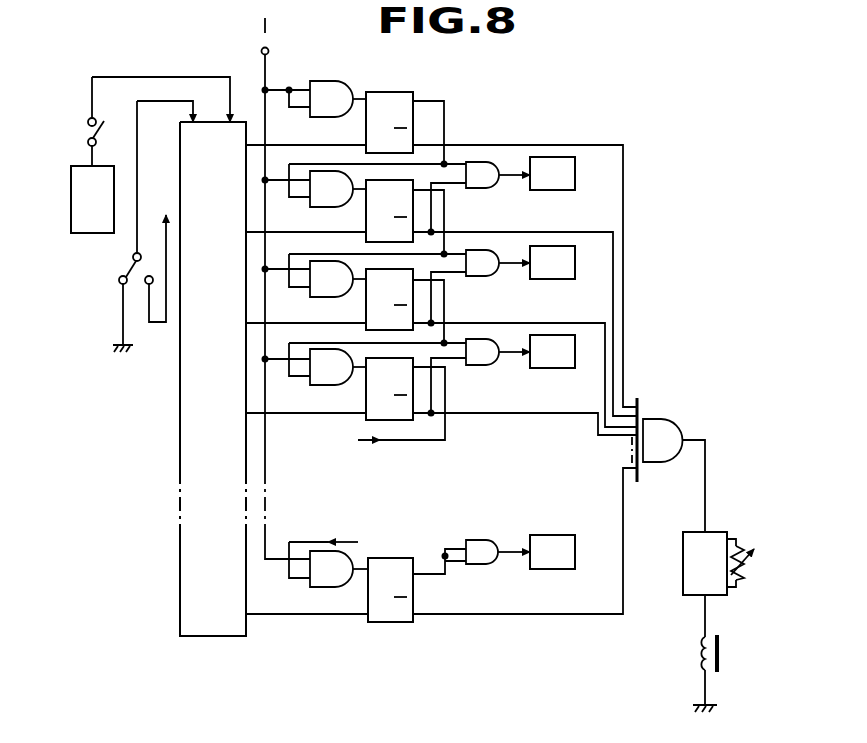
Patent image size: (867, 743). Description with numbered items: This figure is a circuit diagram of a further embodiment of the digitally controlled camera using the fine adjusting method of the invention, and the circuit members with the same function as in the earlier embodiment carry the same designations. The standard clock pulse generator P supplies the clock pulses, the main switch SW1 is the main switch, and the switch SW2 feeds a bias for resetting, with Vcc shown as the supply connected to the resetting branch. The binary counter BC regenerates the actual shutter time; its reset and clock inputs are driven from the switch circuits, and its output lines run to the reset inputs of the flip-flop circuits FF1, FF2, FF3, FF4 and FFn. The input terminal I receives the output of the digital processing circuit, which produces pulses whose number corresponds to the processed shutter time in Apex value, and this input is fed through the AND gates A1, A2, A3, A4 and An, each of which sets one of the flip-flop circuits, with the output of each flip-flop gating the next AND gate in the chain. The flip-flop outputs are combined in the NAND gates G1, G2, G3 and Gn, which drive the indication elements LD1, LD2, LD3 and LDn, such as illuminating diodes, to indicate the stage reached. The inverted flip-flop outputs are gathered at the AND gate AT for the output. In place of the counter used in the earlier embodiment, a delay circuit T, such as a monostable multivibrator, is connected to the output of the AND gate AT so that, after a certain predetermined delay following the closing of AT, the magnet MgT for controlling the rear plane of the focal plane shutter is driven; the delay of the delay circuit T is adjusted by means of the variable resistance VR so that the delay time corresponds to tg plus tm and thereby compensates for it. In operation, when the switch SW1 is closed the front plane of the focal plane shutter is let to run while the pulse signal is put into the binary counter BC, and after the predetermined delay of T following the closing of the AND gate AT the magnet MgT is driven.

The input terminal I is at (286, 288).
The main switch SW1 is at (89, 133).
The standard clock pulse generator P is at (92, 189).
The switch for feeding a bias for resetting SW2 is at (142, 266).
The power supply Vcc is at (162, 255).
The binary counter BC is at (213, 379).
The AND gate A1 is at (314, 99).
The AND gate A2 is at (314, 185).
The AND gate A3 is at (314, 275).
The AND gate A4 is at (314, 364).
The AND gate An is at (328, 564).
The flip-flop circuit FF1 is at (366, 124).
The flip-flop circuit FF2 is at (366, 213).
The flip-flop circuit FF3 is at (366, 301).
The flip-flop circuit FF4 is at (366, 391).
The flip-flop circuit FFn is at (390, 558).
The NAND gate G1 is at (486, 188).
The NAND gate G2 is at (486, 276).
The NAND gate G3 is at (486, 365).
The NAND gate Gn is at (484, 564).
The indication element LD1 is at (537, 173).
The indication element LD2 is at (537, 262).
The indication element LD3 is at (537, 351).
The indication element LDn is at (536, 552).
The AND gate for the output AT is at (671, 465).
The delay circuit T is at (705, 563).
The variable resistance VR is at (750, 563).
The magnet MgT is at (726, 653).